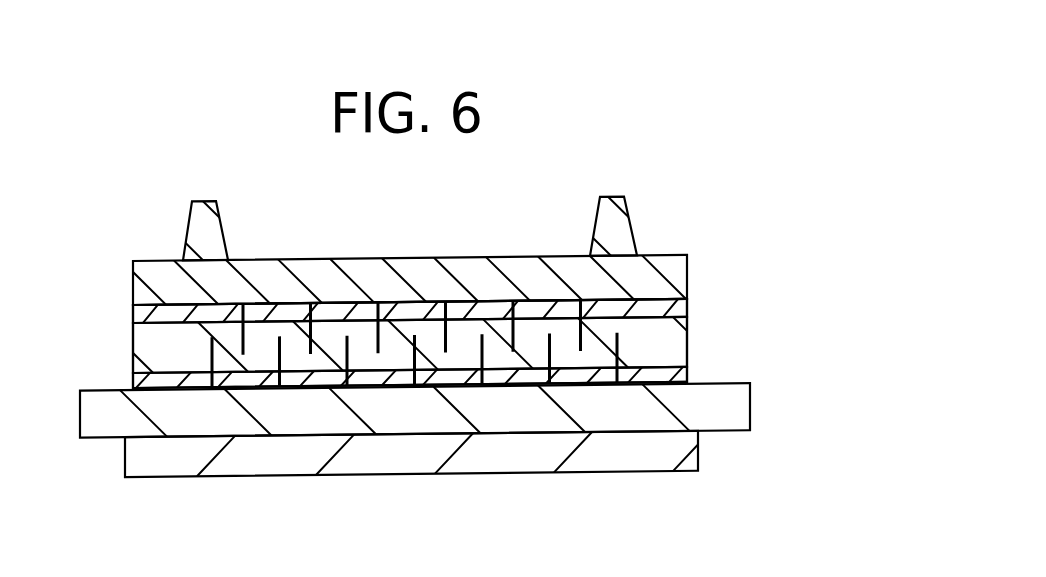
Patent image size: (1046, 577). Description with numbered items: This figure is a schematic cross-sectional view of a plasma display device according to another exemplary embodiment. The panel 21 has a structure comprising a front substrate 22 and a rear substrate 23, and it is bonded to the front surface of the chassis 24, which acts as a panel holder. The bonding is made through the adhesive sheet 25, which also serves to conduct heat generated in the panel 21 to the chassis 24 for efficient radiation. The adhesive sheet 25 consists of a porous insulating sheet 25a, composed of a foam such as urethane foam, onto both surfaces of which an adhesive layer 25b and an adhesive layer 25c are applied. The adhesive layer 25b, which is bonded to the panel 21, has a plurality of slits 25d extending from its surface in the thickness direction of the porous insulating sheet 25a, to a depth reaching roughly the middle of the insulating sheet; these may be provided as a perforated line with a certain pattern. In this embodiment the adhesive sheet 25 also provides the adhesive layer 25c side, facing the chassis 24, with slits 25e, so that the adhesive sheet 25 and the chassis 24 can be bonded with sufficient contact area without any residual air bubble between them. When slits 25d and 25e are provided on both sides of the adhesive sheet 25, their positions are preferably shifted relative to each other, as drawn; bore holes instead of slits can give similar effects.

The panel 21 is at (767, 437).
The front substrate 22 is at (652, 458).
The rear substrate 23 is at (727, 415).
The chassis 24 is at (667, 263).
The adhesive sheet 25 is at (715, 310).
The porous insulating sheet 25a is at (660, 357).
The adhesive layer 25b is at (665, 382).
The adhesive layer 25c is at (645, 302).
The slits 25d is at (546, 362).
The slits 25e is at (508, 306).